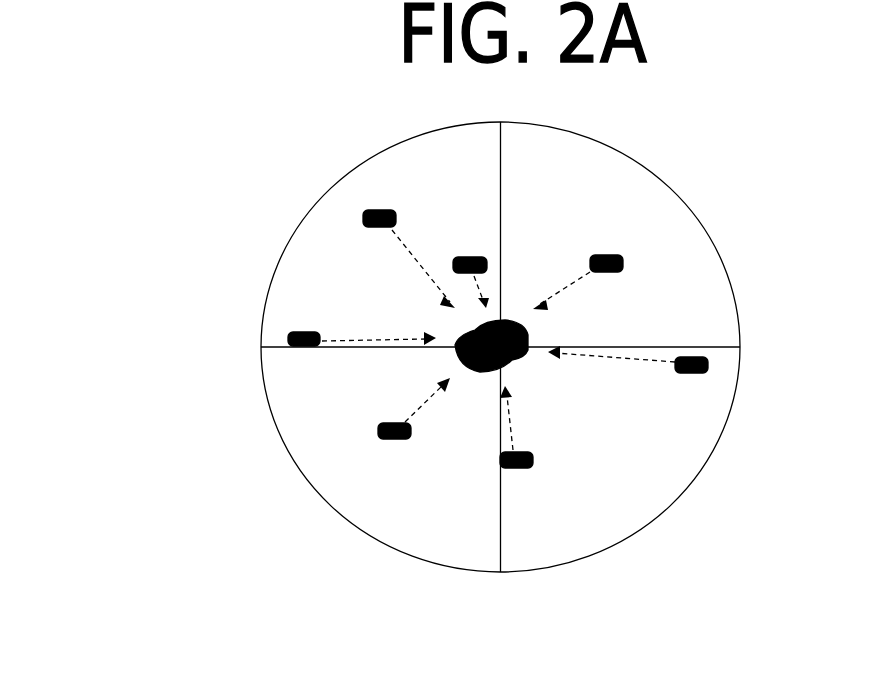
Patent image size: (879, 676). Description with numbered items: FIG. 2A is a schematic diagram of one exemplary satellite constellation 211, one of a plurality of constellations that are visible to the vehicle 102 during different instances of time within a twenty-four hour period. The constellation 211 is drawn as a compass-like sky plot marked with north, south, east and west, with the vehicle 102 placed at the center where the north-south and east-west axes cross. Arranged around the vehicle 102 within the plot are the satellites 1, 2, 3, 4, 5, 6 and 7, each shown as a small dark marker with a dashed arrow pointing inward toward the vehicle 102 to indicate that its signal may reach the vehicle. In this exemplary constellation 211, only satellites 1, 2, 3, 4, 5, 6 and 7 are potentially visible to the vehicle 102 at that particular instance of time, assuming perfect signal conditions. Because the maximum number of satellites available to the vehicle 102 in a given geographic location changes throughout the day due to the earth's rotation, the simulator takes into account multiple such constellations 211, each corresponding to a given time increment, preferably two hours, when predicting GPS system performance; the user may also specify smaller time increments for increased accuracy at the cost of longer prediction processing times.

The satellite constellation 211 is at (206, 281).
The vehicle 102 is at (517, 352).
The satellite 1 is at (409, 248).
The satellite 2 is at (471, 271).
The satellite 3 is at (578, 269).
The satellite 4 is at (628, 350).
The satellite 5 is at (527, 427).
The satellite 6 is at (414, 420).
The satellite 7 is at (362, 329).